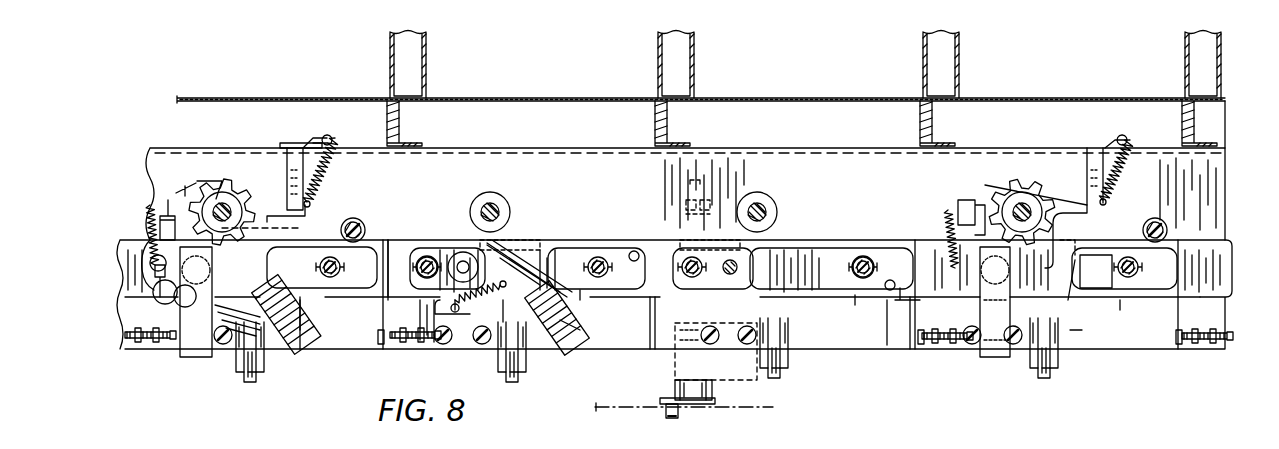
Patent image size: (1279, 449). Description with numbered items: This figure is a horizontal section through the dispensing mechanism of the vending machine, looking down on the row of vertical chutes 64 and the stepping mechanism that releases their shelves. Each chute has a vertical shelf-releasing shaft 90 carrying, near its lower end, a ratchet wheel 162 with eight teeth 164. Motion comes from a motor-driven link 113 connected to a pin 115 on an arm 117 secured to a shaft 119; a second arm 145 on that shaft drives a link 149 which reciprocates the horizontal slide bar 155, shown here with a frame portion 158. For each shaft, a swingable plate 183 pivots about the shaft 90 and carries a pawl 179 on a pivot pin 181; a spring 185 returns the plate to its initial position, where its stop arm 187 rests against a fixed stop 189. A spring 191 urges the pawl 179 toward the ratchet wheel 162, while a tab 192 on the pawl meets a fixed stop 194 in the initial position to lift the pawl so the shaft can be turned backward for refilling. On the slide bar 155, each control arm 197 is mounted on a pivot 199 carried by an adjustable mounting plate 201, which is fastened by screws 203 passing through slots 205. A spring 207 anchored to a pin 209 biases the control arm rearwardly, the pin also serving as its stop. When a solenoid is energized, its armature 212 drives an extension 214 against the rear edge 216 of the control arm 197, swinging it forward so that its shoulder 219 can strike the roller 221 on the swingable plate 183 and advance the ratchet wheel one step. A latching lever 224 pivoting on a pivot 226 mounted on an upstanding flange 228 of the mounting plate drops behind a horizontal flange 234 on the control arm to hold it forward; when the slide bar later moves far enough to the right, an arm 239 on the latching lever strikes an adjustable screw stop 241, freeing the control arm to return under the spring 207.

The vertical compartment 64 is at (554, 62).
The shelf-releasing shaft 90 is at (222, 210).
The link 113 is at (760, 410).
The pin 115 is at (672, 418).
The arm 117 is at (668, 398).
The shaft 119 is at (715, 394).
The second arm 145 is at (727, 275).
The link 149 is at (724, 322).
The slide bar 155 is at (1233, 262).
The frame rib 158 is at (392, 258).
The ratchet wheel 162 is at (261, 188).
The teeth 164 is at (196, 182).
The pawl 179 is at (170, 234).
The pivot pin 181 is at (162, 294).
The swingable plate 183 is at (294, 224).
The spring 185 is at (333, 160).
The stop arm 187 is at (300, 165).
The fixed stop 189 is at (297, 143).
The spring 191 is at (152, 220).
The tab 192 is at (150, 252).
The fixed stop 194 is at (205, 352).
The control arm 197 is at (272, 284).
The pivot 199 is at (463, 253).
The mounting plate 201 is at (370, 260).
The screws 203 is at (430, 257).
The slots 205 is at (425, 256).
The spring 207 is at (452, 300).
The pin 209 is at (450, 314).
The armature 212 is at (264, 360).
The extension 214 is at (250, 360).
The rear edge 216 is at (500, 340).
The shoulder 219 is at (530, 285).
The roller 221 is at (300, 228).
The latching lever 224 is at (305, 326).
The pivot 226 is at (887, 347).
The upstanding flange 228 is at (903, 286).
The horizontal flange 234 is at (572, 328).
The arm 239 is at (381, 348).
The fixed stop 241 is at (132, 340).